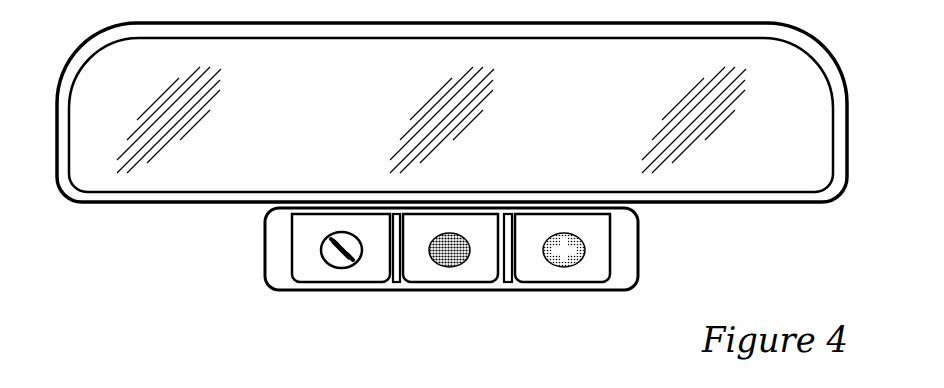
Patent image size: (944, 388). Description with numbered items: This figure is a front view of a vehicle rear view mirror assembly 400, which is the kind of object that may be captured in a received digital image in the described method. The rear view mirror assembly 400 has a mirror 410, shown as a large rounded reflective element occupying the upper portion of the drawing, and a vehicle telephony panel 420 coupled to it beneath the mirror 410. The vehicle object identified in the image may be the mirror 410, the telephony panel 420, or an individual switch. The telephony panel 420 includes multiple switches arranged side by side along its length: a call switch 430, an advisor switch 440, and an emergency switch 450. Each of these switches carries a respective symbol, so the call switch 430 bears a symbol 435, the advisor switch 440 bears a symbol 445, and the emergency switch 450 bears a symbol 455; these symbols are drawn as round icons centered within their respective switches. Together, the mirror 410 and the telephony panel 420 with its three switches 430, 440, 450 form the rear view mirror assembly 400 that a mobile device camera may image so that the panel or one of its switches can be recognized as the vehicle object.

The rear view mirror assembly 400 is at (135, 245).
The mirror 410 is at (195, 205).
The vehicle telephony panel 420 is at (638, 247).
The call switch 430 is at (358, 283).
The symbol 435 is at (327, 264).
The advisor switch 440 is at (472, 283).
The symbol 445 is at (445, 266).
The emergency switch 450 is at (587, 283).
The symbol 455 is at (562, 266).